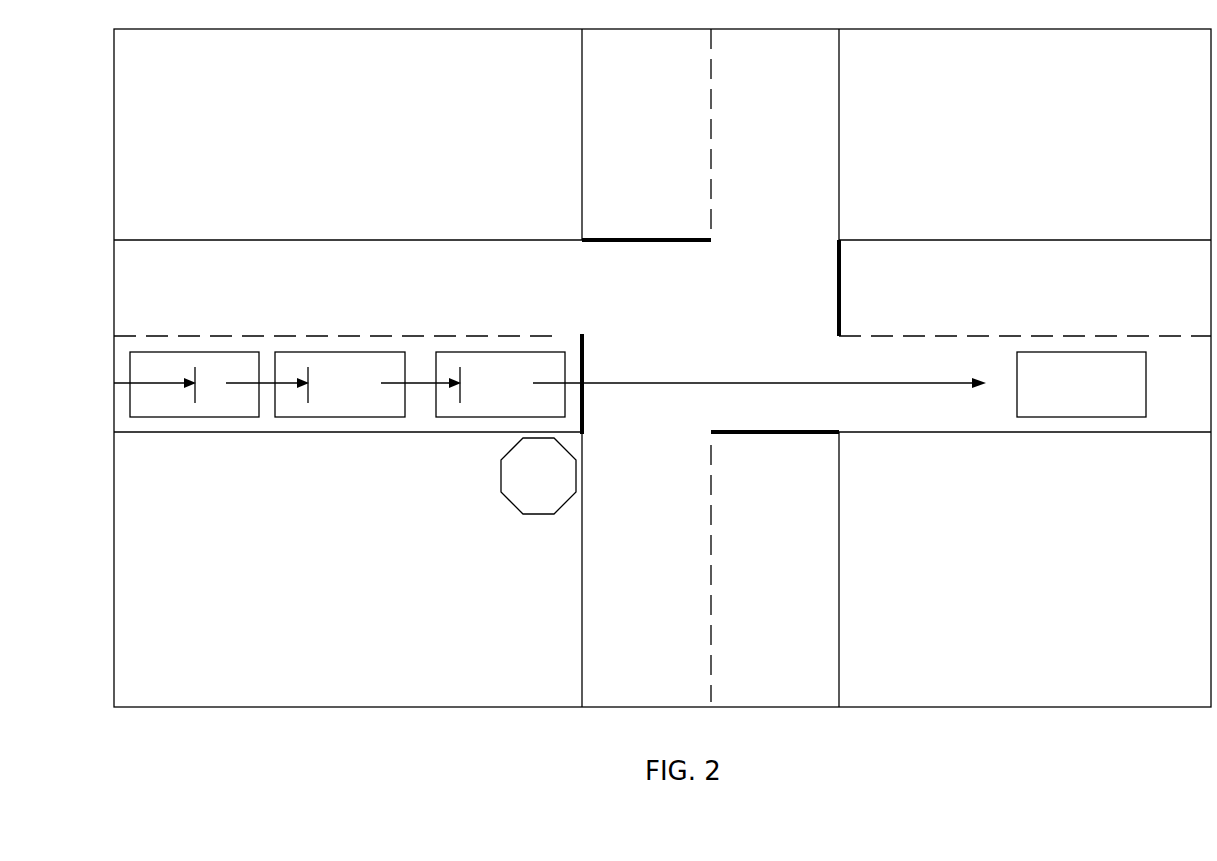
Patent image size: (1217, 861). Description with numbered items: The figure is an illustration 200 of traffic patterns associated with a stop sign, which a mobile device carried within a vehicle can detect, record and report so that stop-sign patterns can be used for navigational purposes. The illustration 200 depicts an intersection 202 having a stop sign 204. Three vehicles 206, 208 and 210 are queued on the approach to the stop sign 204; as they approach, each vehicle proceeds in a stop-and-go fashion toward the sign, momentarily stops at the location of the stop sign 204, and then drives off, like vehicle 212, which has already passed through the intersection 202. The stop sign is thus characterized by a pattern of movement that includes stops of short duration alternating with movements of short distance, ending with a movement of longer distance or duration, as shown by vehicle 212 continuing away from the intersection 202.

The illustration 200 is at (92, 106).
The intersection 202 is at (725, 328).
The stop sign 204 is at (522, 513).
The vehicle 206 is at (227, 352).
The vehicle 208 is at (341, 352).
The vehicle 210 is at (500, 352).
The vehicle 212 is at (1068, 352).